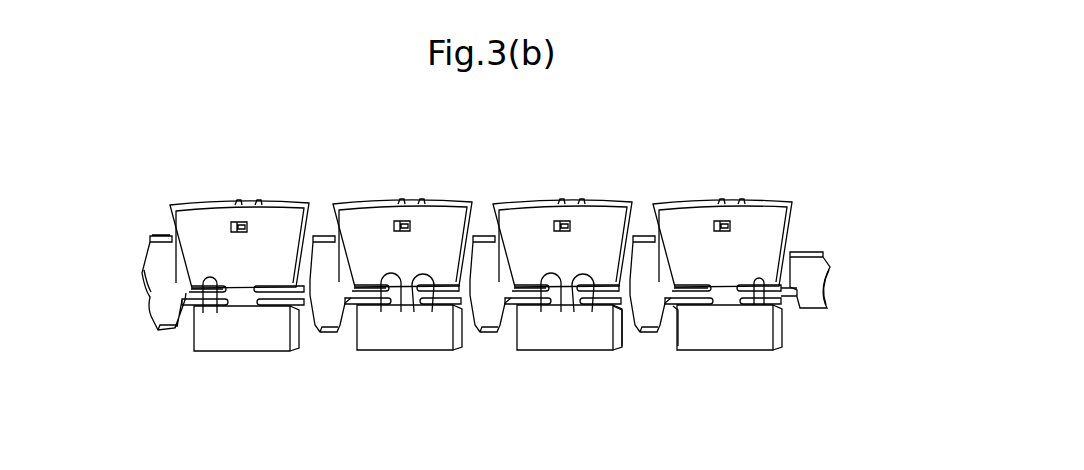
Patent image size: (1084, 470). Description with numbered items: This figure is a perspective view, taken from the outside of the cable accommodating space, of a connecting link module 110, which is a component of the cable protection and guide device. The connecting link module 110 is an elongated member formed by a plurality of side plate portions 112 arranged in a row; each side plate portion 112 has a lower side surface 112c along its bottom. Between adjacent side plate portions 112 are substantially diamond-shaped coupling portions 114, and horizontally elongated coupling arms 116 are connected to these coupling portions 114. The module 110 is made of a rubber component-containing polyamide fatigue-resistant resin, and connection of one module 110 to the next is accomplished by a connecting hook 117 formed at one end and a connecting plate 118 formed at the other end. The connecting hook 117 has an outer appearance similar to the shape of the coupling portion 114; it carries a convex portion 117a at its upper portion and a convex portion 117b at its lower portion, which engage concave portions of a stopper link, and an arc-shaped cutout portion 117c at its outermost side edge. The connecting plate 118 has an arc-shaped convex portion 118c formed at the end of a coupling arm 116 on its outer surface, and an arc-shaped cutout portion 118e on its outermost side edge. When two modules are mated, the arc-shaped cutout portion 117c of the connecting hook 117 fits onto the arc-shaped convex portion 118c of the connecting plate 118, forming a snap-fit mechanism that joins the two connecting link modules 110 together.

The connecting link module 110 is at (756, 374).
The side plate portion 112 is at (237, 340).
The lower side surface 112c is at (621, 370).
The coupling portion 114 is at (320, 312).
The coupling arm 116 is at (212, 300).
The connecting hook 117 is at (163, 312).
The convex portion 117a is at (158, 236).
The convex portion 117b is at (164, 334).
The arc-shaped cutout portion 117c is at (150, 292).
The connecting plate 118 is at (810, 260).
The arc-shaped convex portion 118c is at (798, 297).
The arc-shaped cutout portion 118e is at (822, 288).